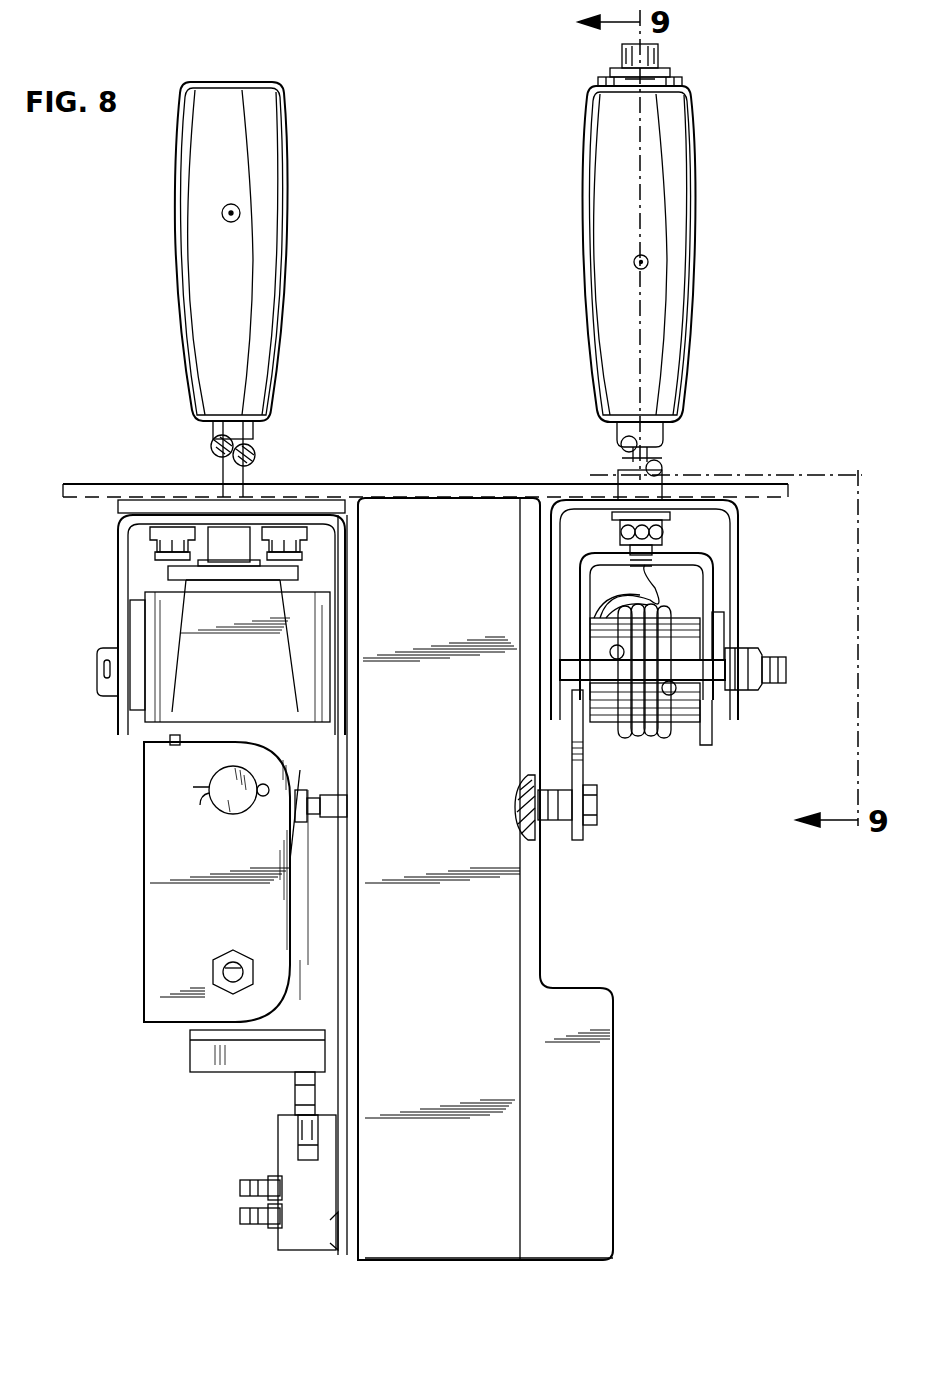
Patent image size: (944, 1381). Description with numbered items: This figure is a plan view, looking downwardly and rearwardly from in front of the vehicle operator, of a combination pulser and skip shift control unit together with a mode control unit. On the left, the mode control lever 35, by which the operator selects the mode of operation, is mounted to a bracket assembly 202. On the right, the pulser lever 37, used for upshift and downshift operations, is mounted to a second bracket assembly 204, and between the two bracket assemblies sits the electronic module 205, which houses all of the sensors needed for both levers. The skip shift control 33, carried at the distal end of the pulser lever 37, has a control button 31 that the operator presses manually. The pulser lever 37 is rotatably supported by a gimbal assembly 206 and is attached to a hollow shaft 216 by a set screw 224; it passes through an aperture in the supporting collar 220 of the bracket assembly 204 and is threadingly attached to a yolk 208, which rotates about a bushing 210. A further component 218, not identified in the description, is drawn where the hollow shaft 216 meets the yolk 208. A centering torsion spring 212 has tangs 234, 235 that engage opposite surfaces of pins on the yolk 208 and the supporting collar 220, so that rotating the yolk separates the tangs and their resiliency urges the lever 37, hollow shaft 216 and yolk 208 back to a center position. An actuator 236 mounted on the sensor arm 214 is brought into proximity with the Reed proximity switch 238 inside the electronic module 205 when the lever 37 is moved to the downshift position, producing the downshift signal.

The control button 31 is at (612, 57).
The skip shift control 33 is at (668, 32).
The mode control lever 35 is at (284, 140).
The pulser lever 37 is at (690, 110).
The bracket assembly 202 is at (330, 502).
The bracket assembly 204 is at (523, 525).
The electronic module 205 is at (465, 1227).
The gimbal assembly 206 is at (775, 660).
The yolk 208 is at (710, 565).
The bushing 210 is at (678, 722).
The centering torsion spring 212 is at (648, 735).
The sensor arm 214 is at (583, 755).
The hollow shaft 216 is at (640, 463).
The retaining nut 218 is at (668, 520).
The supporting collar 220 is at (740, 590).
The set screw 224 is at (648, 262).
The tang 234 is at (678, 690).
The tang 235 is at (622, 650).
The actuator 236 is at (555, 820).
The Reed proximity switch 238 is at (522, 795).